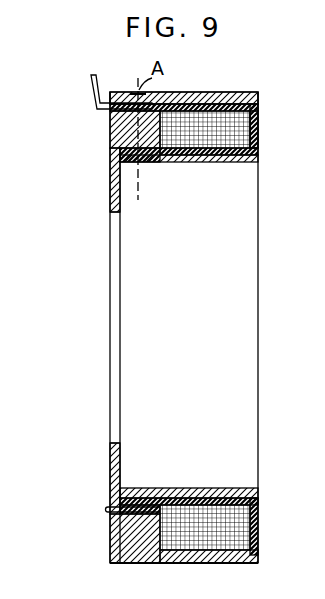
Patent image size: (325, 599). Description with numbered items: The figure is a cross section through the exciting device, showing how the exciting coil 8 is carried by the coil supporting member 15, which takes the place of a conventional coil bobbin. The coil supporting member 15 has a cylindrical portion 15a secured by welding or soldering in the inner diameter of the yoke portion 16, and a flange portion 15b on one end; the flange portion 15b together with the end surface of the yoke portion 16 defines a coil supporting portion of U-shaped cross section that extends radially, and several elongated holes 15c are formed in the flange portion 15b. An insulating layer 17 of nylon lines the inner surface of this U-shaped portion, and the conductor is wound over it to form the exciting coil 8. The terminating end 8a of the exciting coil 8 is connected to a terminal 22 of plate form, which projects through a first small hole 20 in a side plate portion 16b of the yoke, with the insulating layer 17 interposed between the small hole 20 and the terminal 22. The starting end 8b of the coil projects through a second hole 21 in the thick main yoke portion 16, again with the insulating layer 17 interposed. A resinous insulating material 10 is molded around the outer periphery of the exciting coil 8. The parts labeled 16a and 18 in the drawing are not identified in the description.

The exciting coil 8 is at (251, 125).
The terminating end of the exciting coil 8a is at (172, 94).
The starting end of the exciting coil 8b is at (108, 508).
The resinous insulating material 10 is at (231, 92).
The coil supporting member 15 is at (258, 106).
The cylindrical portion 15a is at (215, 488).
The flange portion 15b is at (255, 531).
The elongated holes 15c is at (258, 178).
The yoke portion 16 is at (112, 178).
The side wall upper block 16a is at (110, 154).
The side plate portion 16b is at (122, 165).
The insulating layer 17 is at (256, 152).
The casing wall 18 is at (261, 281).
The first small hole 20 is at (128, 91).
The second hole 21 is at (116, 524).
The terminal of a plate form 22 is at (97, 98).